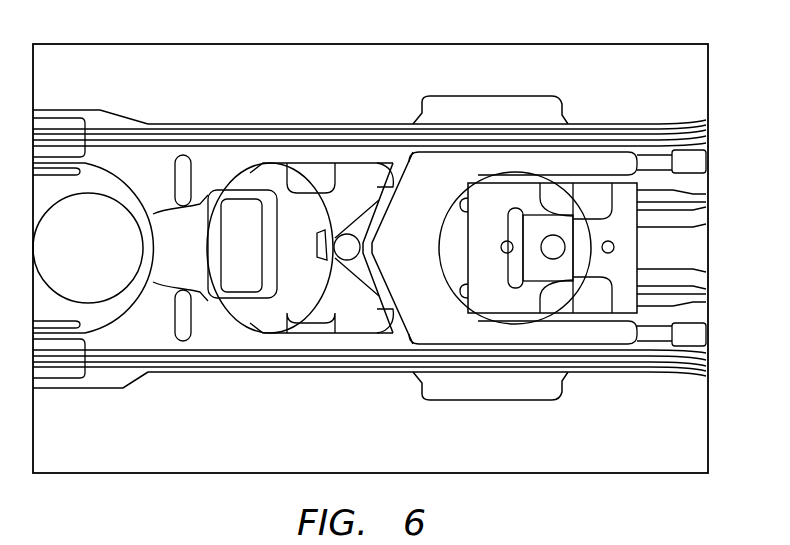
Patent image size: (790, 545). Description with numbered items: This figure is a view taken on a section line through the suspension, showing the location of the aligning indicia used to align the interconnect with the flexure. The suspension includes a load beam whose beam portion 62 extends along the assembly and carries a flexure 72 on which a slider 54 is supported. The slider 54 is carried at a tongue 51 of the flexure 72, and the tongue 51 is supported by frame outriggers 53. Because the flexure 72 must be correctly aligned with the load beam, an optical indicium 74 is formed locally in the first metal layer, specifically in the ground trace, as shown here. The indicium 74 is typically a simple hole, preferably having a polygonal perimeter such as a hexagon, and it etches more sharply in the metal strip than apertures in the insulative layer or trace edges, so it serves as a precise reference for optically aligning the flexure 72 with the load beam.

The tongue 51 is at (453, 233).
The frame outriggers 53 is at (590, 123).
The slider 54 is at (589, 183).
The beam portion 62 is at (107, 110).
The flexure 72 is at (350, 197).
The optical indicium 74 is at (343, 262).